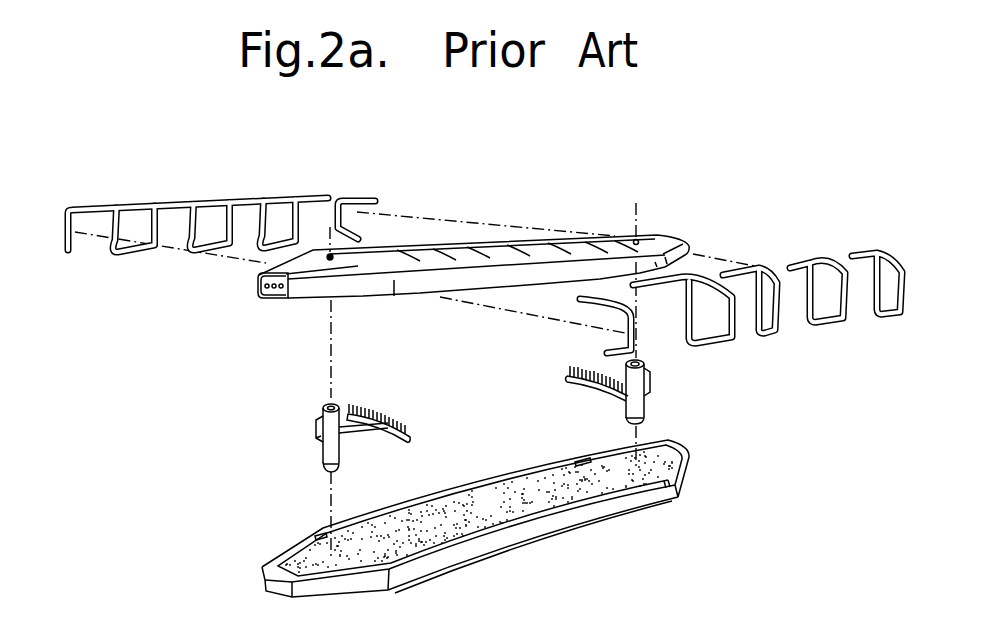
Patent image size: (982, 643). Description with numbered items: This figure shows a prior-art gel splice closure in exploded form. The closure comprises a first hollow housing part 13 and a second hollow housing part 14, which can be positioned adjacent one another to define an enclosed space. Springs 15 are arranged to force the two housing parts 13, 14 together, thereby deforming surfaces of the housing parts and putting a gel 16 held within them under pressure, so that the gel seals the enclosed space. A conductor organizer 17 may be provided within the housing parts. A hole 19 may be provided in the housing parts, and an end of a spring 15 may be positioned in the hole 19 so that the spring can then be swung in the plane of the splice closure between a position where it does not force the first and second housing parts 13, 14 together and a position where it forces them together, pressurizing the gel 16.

The first hollow housing part 13 is at (305, 287).
The second hollow housing part 14 is at (278, 549).
The springs 15 is at (122, 209).
The gel 16 is at (510, 492).
The conductor organizer 17 is at (317, 419).
The hole 19 is at (330, 254).